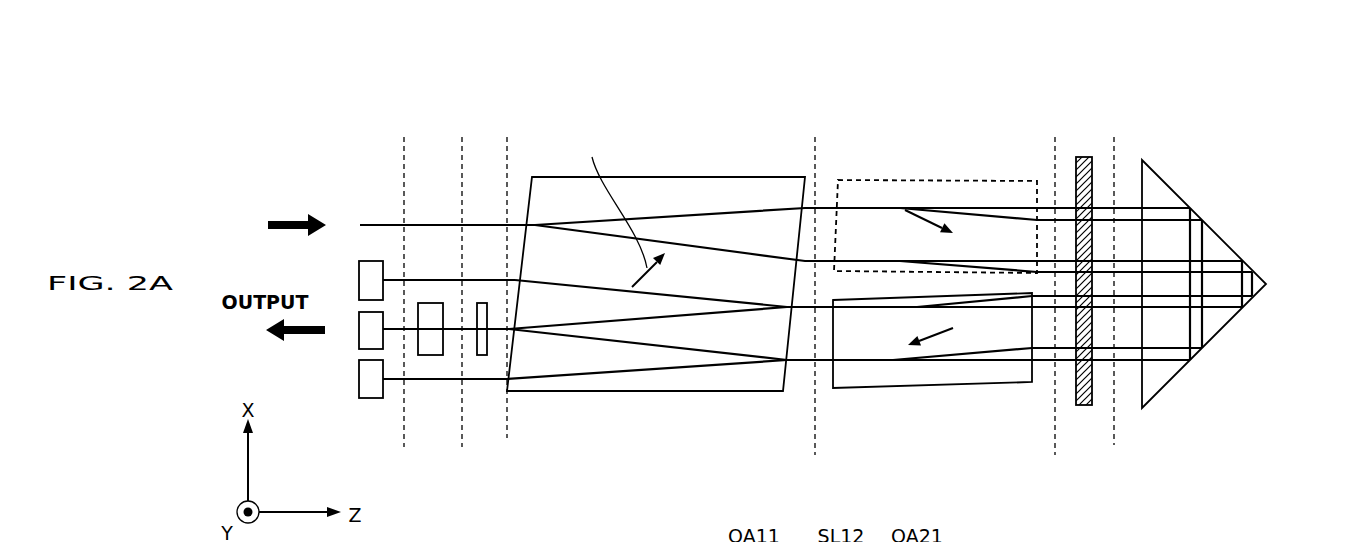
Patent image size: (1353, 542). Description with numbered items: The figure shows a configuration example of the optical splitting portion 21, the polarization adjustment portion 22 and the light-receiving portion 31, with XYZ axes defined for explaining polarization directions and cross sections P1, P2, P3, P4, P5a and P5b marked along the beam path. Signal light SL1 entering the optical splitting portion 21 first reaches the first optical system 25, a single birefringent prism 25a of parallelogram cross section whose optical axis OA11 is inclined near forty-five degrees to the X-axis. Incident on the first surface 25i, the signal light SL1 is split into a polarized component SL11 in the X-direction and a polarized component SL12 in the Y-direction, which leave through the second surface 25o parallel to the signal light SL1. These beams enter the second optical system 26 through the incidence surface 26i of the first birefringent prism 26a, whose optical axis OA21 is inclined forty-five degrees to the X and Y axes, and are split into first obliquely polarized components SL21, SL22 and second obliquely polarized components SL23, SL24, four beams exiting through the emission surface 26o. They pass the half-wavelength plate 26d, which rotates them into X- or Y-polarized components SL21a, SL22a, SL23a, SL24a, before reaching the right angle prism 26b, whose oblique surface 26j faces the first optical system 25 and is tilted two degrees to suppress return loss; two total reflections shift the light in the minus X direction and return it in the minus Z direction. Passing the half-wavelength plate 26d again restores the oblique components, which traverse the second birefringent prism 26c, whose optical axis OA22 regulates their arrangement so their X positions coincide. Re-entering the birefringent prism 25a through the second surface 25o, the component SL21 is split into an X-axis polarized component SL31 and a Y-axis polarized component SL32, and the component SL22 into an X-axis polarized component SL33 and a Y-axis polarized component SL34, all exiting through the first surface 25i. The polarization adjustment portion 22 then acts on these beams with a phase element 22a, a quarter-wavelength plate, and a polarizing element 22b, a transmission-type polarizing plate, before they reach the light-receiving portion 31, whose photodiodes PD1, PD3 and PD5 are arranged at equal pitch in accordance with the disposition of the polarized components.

The optical splitting portion 21 is at (545, 131).
The polarization adjustment portion 22 is at (455, 368).
The phase element 22a is at (483, 303).
The polarizing element 22b is at (430, 303).
The first optical system 25 is at (640, 288).
The first surface 25i is at (530, 177).
The second surface 25o is at (783, 391).
The birefringent prism 25a is at (737, 393).
The second optical system 26 is at (973, 282).
The first birefringent prism 26a is at (875, 180).
The right angle prism 26b is at (1223, 304).
The second birefringent prism 26c is at (865, 383).
The ½ wavelength plate 26d is at (1084, 405).
The incidence surface 26i is at (836, 183).
The oblique surface 26j is at (1143, 396).
The emission surface 26o is at (1042, 193).
The light-receiving portion 31 is at (336, 380).
The first photodiode PD1 is at (359, 281).
The third photodiode PD3 is at (359, 331).
The fifth photodiode PD5 is at (372, 398).
The signal light SL1 is at (435, 225).
The polarized component in the X-direction SL11 is at (717, 210).
The polarized component in the Y-direction SL12 is at (677, 245).
The first obliquely polarized component SL21 is at (987, 218).
The first obliquely polarized component SL22 is at (992, 272).
The second obliquely polarized component SL23 is at (1027, 207).
The second obliquely polarized component SL24 is at (910, 261).
The polarized component SL21a is at (1135, 219).
The polarized component SL22a is at (1128, 272).
The polarized component SL23a is at (1122, 207).
The polarized component SL24a is at (1122, 261).
The polarized component in the X-axis direction SL31 is at (692, 352).
The polarized component in the Y-axis direction SL32 is at (657, 370).
The X-axis direction polarized component SL33 is at (545, 333).
The Y-axis direction polarized component SL34 is at (585, 323).
The optical axis OA11 is at (613, 211).
The optical axis OA21 is at (932, 222).
The optical axis OA22 is at (925, 345).
The cross section P1 is at (404, 140).
The cross section P2 is at (462, 140).
The cross section P3 is at (507, 438).
The cross section P4 is at (815, 455).
The cross section P5a is at (1055, 455).
The cross section P5b is at (1114, 445).